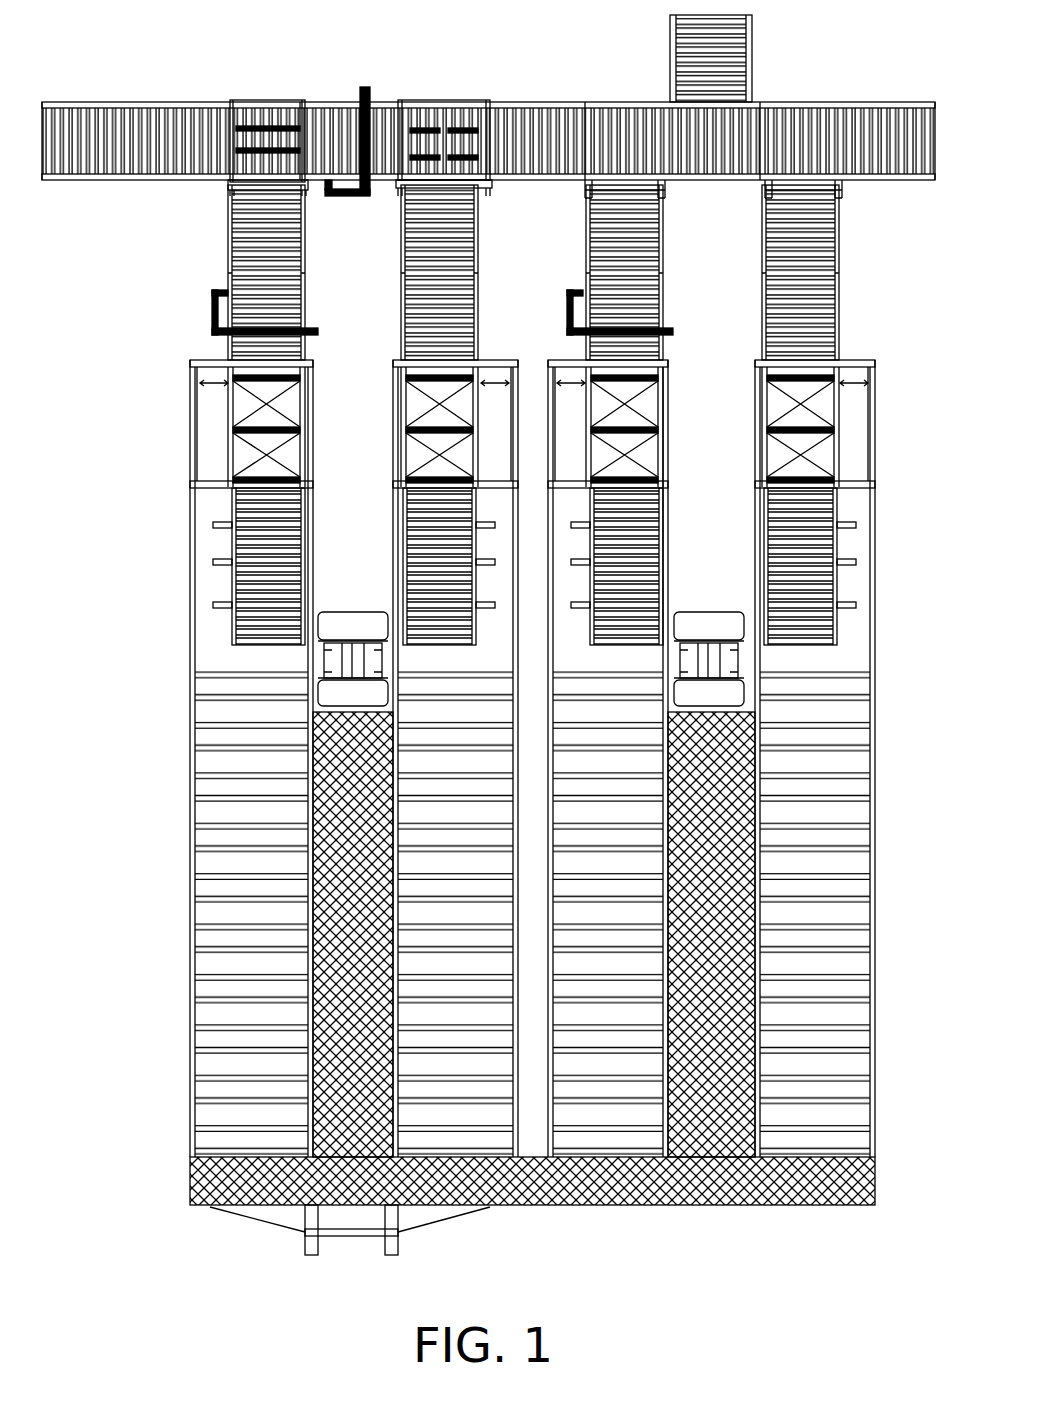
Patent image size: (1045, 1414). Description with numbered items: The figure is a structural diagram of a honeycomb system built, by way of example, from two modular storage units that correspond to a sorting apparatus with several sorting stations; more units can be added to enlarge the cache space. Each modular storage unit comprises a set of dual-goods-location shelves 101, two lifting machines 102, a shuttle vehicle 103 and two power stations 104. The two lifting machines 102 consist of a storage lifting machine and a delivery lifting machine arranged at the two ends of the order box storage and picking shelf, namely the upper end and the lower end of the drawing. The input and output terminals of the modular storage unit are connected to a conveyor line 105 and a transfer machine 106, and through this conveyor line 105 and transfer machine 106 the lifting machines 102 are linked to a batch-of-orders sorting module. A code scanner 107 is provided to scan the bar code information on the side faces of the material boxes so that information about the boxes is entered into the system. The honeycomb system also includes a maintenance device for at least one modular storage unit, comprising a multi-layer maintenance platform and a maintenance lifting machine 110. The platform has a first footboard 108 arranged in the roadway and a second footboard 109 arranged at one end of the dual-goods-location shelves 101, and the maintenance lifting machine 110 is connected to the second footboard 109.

The dual-goods-location shelves 101 is at (255, 1050).
The lifting machine 102 is at (222, 420).
The shuttle vehicle 103 is at (320, 685).
The power station 104 is at (255, 557).
The conveyor line 105 is at (270, 300).
The transfer machine 106 is at (255, 100).
The code scanner 107 is at (372, 117).
The first footboard 108 is at (355, 1133).
The second footboard 109 is at (275, 1192).
The maintenance lifting machine 110 is at (395, 1240).